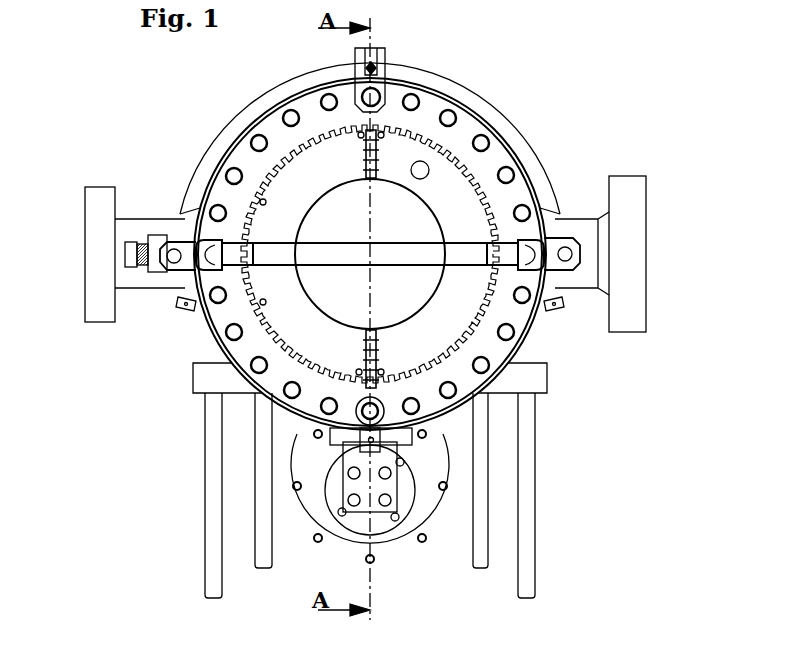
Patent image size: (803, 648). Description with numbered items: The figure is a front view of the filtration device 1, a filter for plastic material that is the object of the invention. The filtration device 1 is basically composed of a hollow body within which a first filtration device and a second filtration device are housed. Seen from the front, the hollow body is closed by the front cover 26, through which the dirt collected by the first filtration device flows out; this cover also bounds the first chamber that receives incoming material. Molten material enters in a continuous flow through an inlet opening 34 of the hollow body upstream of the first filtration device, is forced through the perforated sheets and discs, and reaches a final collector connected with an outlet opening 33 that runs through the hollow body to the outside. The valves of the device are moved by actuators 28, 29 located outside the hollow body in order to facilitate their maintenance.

The filtration device 1 is at (555, 131).
The front cover 26 is at (247, 153).
The actuator 28 is at (412, 297).
The actuator 29 is at (313, 525).
The outlet opening 33 is at (97, 198).
The inlet opening 34 is at (623, 190).